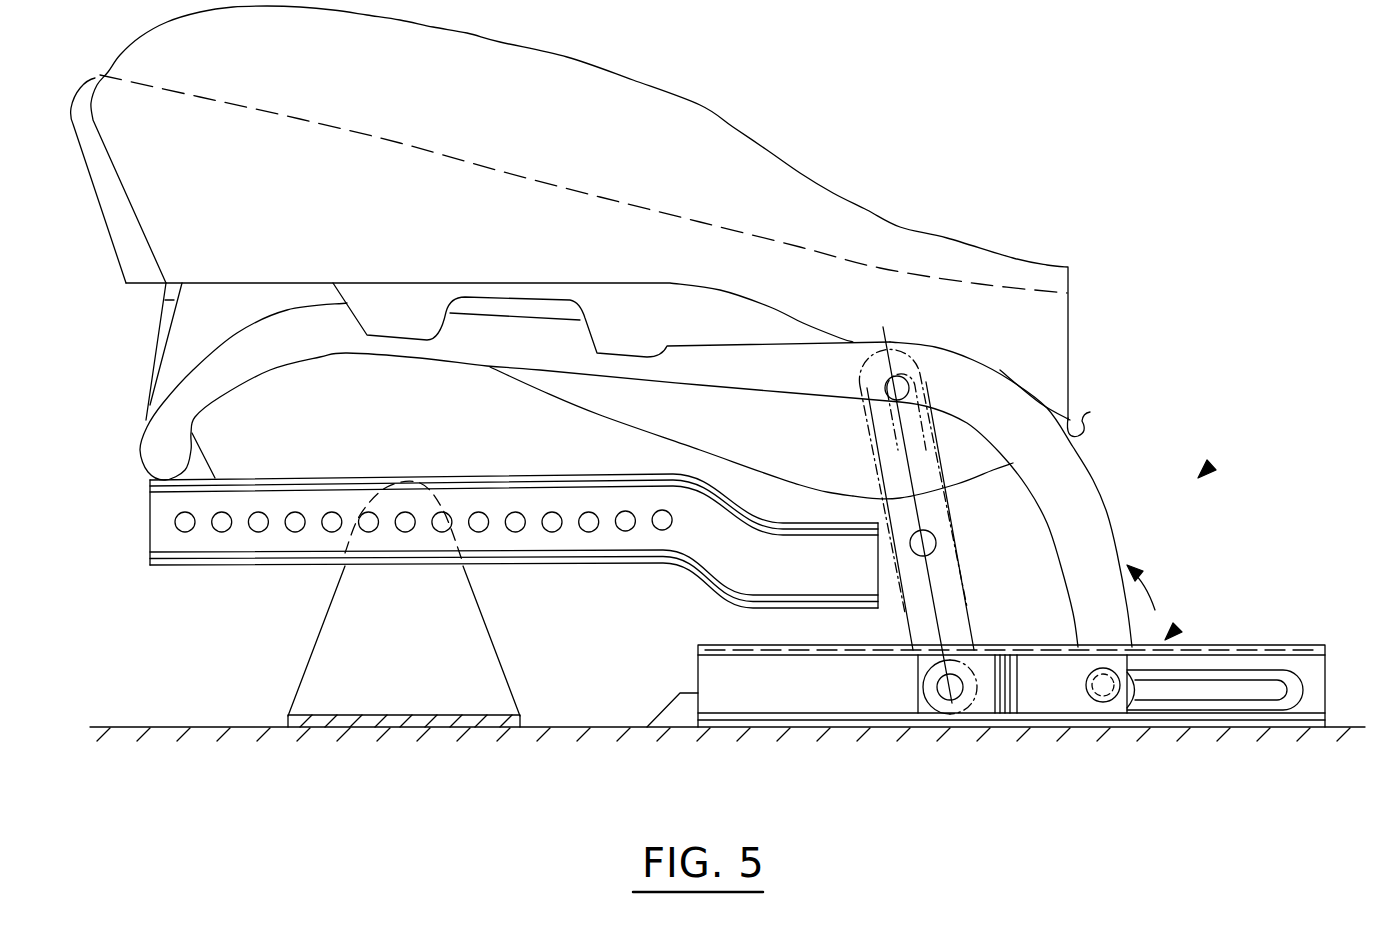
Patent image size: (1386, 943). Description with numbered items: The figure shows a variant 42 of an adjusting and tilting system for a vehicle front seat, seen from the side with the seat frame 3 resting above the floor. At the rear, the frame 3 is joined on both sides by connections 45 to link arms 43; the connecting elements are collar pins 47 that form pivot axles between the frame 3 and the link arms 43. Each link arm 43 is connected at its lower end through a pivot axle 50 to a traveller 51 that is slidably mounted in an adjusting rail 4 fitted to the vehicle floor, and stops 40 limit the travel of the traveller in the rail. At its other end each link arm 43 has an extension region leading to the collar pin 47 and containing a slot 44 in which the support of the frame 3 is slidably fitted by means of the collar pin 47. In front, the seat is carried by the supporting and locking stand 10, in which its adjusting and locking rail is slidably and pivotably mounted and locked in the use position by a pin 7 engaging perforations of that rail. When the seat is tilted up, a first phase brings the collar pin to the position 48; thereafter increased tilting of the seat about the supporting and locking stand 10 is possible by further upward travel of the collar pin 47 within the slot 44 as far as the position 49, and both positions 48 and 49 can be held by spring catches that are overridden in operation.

The frame 3 is at (1073, 520).
The adjusting rails 4 is at (1308, 698).
The pin 7 is at (407, 523).
The supporting and locking stand 10 is at (456, 683).
The stops 40 is at (683, 713).
The variant of an adjusting and tilting system 42 is at (1202, 474).
The link arms 43 is at (1197, 663).
The slots 44 is at (1223, 690).
The connections 45 is at (1168, 637).
The collar pins 47 is at (1106, 688).
The position 48 is at (918, 551).
The position 49 is at (909, 386).
The pivot axles 50 is at (943, 697).
The travellers 51 is at (990, 697).